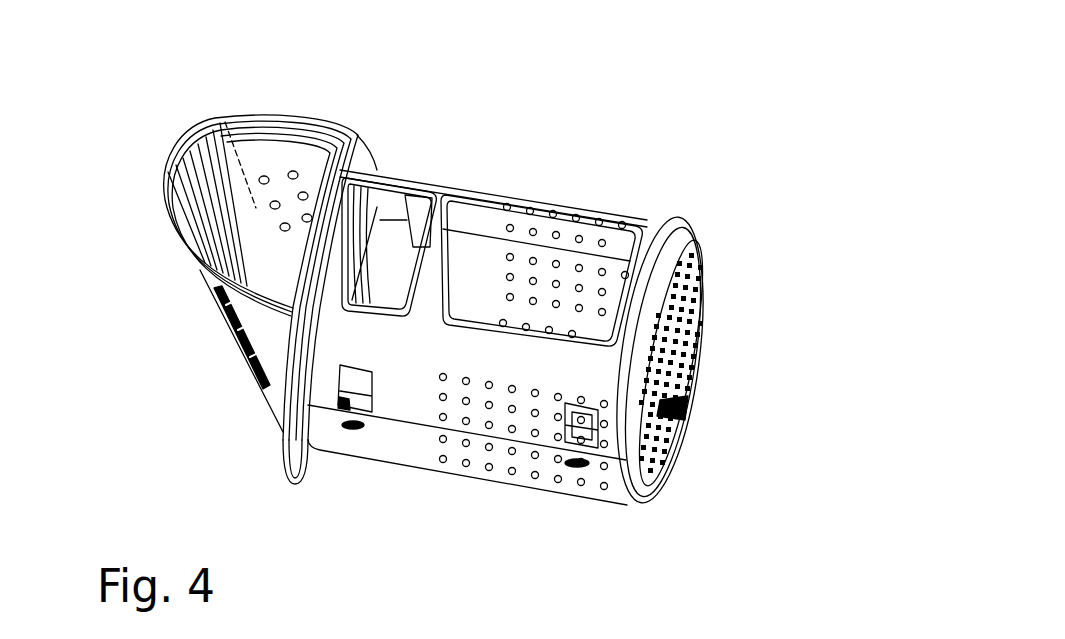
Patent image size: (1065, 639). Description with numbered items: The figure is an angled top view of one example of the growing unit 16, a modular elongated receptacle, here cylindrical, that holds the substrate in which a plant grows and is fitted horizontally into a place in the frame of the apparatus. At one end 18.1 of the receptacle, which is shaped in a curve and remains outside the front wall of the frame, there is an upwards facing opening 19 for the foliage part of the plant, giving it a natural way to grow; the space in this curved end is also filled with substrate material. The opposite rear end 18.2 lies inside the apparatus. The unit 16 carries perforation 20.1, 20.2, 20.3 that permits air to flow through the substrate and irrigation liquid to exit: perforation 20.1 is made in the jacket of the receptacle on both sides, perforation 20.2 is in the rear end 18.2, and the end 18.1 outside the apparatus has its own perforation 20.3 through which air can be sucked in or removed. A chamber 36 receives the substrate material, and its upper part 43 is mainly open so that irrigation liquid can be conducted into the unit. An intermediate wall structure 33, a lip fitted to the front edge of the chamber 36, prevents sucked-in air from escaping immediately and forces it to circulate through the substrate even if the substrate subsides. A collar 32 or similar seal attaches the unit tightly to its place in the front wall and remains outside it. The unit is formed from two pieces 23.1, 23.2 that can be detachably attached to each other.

The growing unit 16 is at (570, 134).
The end of the receptacle 18.1 is at (162, 313).
The rear end of the unit 18.2 is at (728, 345).
The opening 19 is at (209, 186).
The perforation 20.1 is at (570, 279).
The perforation 20.2 is at (688, 408).
The perforation 20.3 is at (272, 147).
The piece 23.1 is at (657, 484).
The piece 23.2 is at (688, 222).
The collar 32 is at (300, 462).
The intermediate wall structure 33 is at (386, 178).
The chamber 36 is at (481, 262).
The upper part of the chamber 43 is at (497, 461).